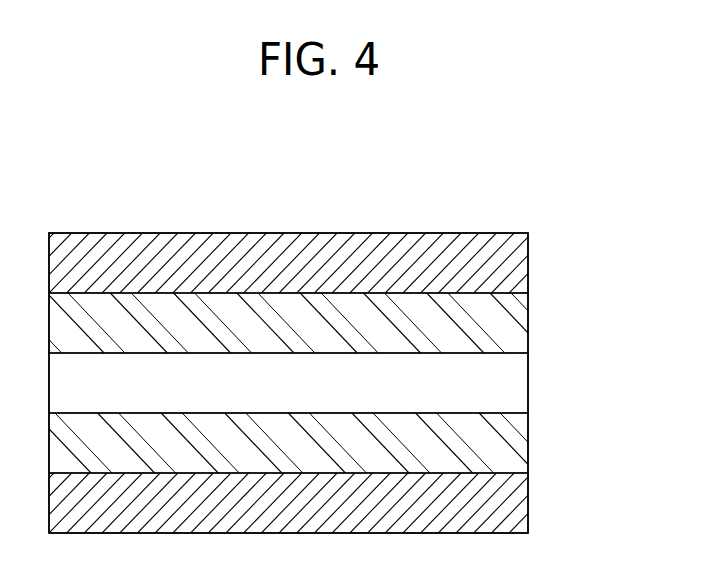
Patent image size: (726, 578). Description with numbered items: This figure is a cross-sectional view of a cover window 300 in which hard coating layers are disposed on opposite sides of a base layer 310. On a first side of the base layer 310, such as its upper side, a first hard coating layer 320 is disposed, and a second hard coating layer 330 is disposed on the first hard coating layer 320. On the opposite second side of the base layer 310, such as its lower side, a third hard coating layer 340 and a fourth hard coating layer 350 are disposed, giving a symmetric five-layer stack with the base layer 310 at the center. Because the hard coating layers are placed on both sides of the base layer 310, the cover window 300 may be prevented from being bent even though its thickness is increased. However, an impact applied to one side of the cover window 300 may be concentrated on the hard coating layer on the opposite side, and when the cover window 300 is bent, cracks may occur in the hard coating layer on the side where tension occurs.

The cover window 300 is at (329, 178).
The base layer 310 is at (505, 387).
The first hard coating layer 320 is at (505, 327).
The second hard coating layer 330 is at (505, 270).
The third hard coating layer 340 is at (505, 446).
The fourth hard coating layer 350 is at (505, 505).